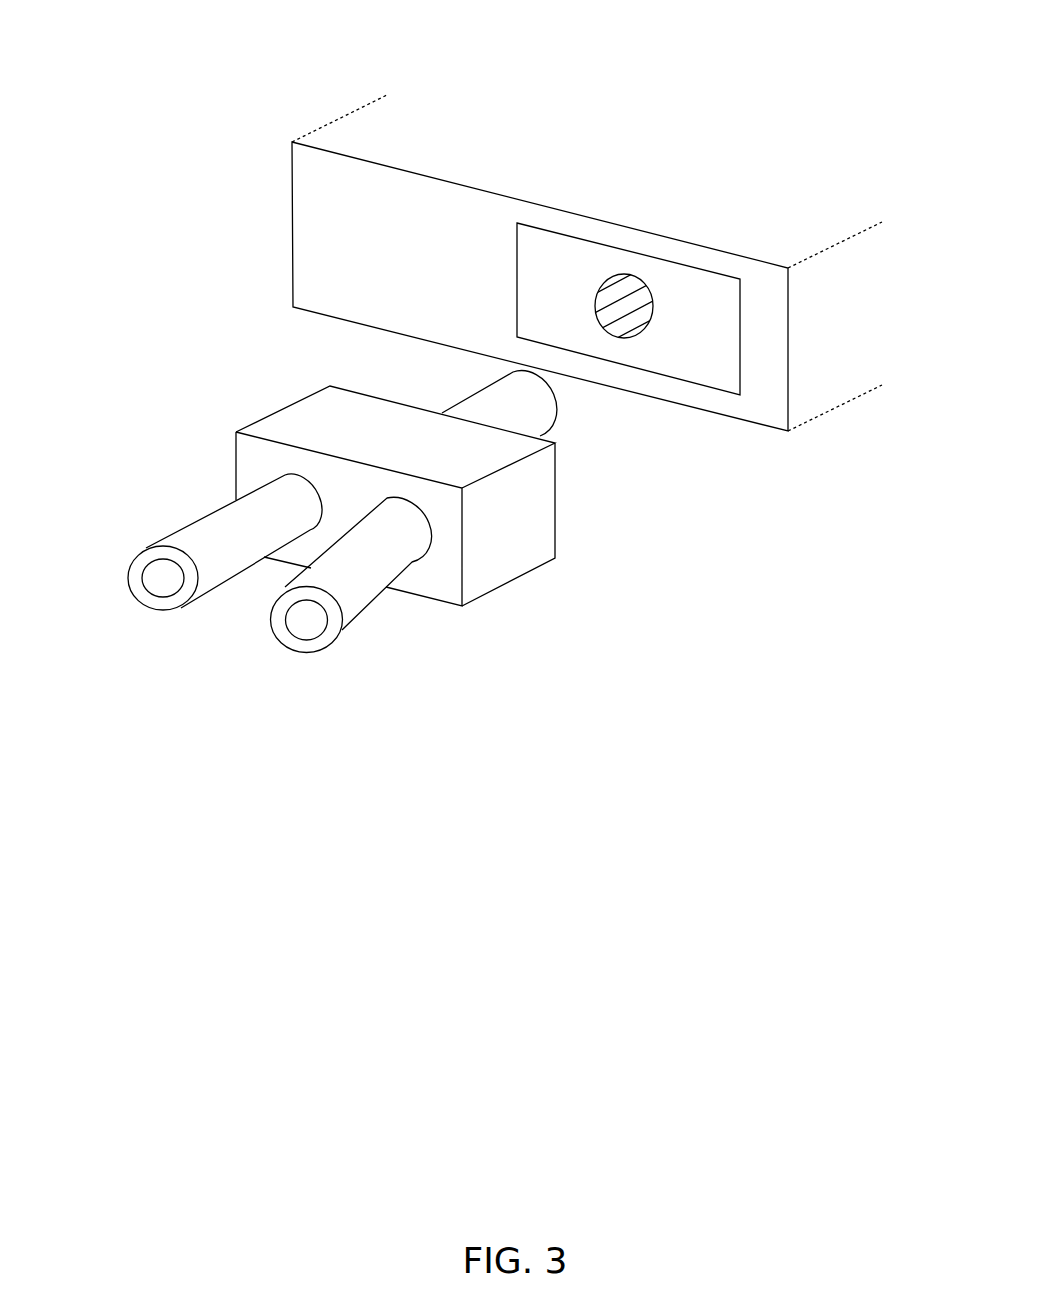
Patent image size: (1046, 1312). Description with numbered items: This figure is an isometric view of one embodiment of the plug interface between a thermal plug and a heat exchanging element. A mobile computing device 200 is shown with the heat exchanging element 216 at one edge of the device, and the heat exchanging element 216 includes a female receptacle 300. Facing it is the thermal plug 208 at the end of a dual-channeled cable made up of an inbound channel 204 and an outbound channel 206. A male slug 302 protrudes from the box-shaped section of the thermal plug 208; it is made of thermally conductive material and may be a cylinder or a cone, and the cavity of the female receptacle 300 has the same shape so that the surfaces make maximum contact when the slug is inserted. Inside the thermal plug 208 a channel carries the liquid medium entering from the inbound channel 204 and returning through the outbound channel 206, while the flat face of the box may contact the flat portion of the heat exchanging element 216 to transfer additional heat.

The mobile computing device 200 is at (372, 130).
The female receptacle 300 is at (620, 273).
The heat exchanging element 216 is at (713, 373).
The thermal plug 208 is at (315, 390).
The male slug 302 is at (558, 413).
The inbound channel 204 is at (197, 520).
The outbound channel 206 is at (373, 605).